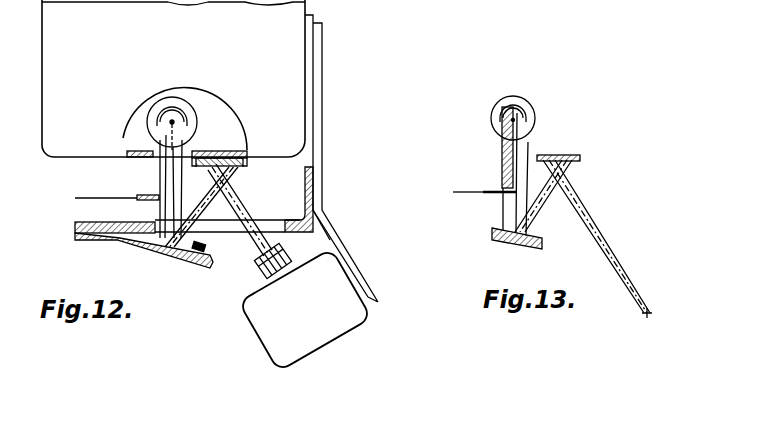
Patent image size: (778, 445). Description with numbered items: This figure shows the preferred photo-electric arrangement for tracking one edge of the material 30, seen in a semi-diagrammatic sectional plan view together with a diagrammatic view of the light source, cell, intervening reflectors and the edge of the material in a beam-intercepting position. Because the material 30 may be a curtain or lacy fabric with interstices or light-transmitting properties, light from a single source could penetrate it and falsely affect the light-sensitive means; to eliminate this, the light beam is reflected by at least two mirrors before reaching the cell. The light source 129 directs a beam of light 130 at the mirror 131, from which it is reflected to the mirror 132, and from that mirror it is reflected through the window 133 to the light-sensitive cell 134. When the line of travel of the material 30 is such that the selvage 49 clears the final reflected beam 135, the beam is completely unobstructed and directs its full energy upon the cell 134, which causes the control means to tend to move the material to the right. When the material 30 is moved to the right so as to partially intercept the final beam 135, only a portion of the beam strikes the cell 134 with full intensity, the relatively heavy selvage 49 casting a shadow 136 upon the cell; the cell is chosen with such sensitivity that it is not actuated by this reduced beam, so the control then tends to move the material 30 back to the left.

In FIG. 12, the material 30 is at (83, 191).
In FIG. 13, the material 30 is at (458, 192).
In FIG. 12, the selvage 49 is at (143, 195).
In FIG. 13, the selvage 49 is at (492, 190).
In FIG. 12, the light source 129 is at (276, 317).
In FIG. 13, the light source 129 is at (650, 318).
In FIG. 12, the beam of light 130 is at (233, 190).
In FIG. 13, the beam of light 130 is at (596, 236).
In FIG. 12, the mirror 131 is at (236, 150).
In FIG. 13, the mirror 131 is at (579, 158).
In FIG. 12, the mirror 132 is at (180, 258).
In FIG. 12, the window 133 is at (238, 225).
In FIG. 12, the light-sensitive cell 134 is at (186, 113).
In FIG. 13, the light-sensitive cell 134 is at (517, 113).
In FIG. 12, the final reflected beam 135 is at (176, 195).
In FIG. 13, the final reflected beam 135 is at (522, 152).
In FIG. 13, the shadow 136 is at (502, 148).